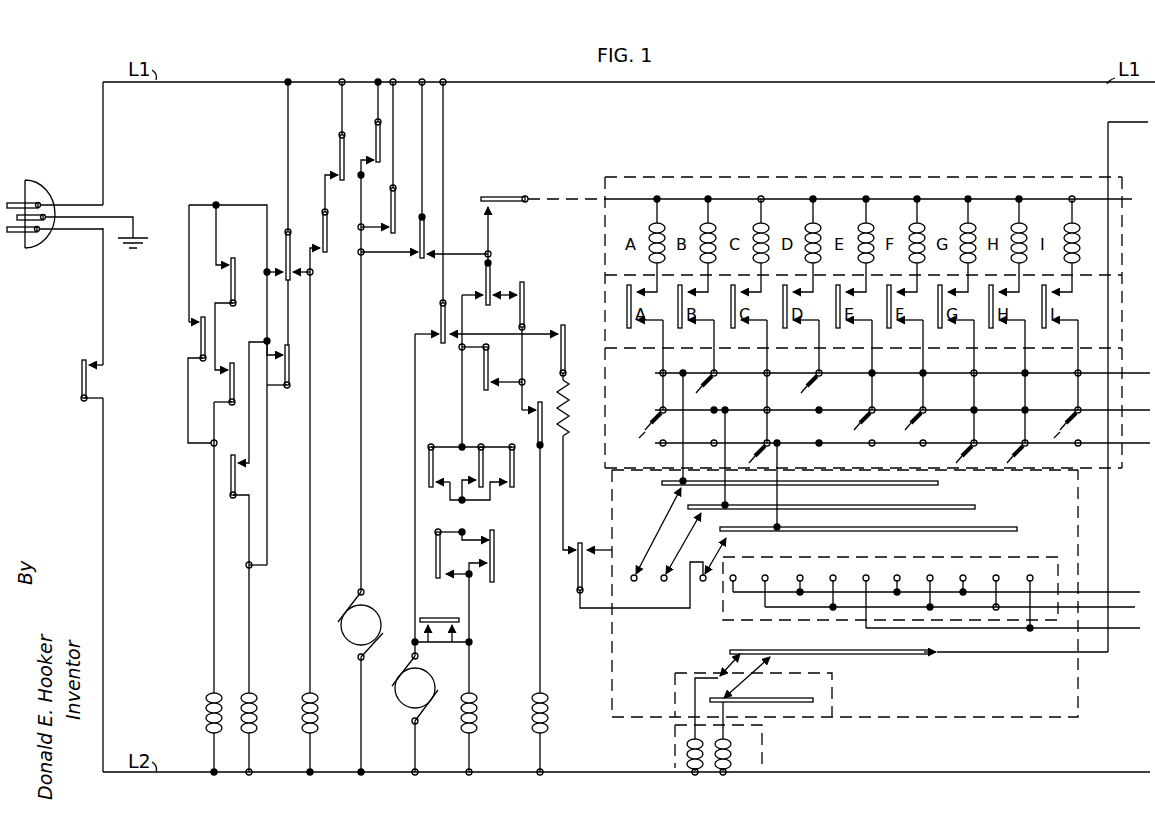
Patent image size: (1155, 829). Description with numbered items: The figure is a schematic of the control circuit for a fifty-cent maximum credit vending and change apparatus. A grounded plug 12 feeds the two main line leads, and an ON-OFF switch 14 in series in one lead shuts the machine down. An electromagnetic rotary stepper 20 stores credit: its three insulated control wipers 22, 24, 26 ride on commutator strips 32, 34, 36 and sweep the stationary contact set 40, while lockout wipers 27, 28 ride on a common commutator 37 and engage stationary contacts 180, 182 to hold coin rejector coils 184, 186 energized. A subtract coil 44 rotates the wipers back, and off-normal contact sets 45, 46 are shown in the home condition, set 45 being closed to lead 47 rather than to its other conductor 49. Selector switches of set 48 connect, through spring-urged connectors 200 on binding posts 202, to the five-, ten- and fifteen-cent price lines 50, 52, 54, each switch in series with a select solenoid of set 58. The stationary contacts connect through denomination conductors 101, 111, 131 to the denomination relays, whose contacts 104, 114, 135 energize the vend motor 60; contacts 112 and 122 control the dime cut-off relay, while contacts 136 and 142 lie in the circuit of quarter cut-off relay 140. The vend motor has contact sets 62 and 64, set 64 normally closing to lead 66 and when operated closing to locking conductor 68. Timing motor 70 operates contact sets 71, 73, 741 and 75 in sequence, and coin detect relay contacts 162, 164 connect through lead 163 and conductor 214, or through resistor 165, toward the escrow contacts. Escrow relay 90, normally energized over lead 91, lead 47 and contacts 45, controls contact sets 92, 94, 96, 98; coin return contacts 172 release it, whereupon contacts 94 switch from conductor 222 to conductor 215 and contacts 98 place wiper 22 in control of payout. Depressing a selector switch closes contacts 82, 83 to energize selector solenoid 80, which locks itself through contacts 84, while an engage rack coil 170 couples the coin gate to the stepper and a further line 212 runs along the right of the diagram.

The grounded plug 12 is at (37, 199).
The ON-OFF switch 14 is at (90, 357).
The timing motor contact set 741 is at (226, 261).
The conductor 49 is at (265, 301).
The dime cut-off relay contacts 122 is at (198, 324).
The 10¢ relay contacts 112 is at (228, 374).
The quarter payout solenoid contacts 136 is at (246, 456).
The off-normal contact set 45 is at (274, 278).
The quarter cut-off relay contacts 142 is at (278, 352).
The lead 47 is at (310, 248).
The coin return lever contacts 172 is at (314, 248).
The escrow contact set 92 is at (338, 172).
The timing motor contact set 71 is at (372, 154).
The vend motor contact set 62 is at (384, 226).
The lead 163 is at (372, 258).
The coin detect relay contacts 162 is at (426, 264).
The conductor 214 is at (466, 244).
The conductor 222 is at (470, 287).
The escrow contact set 94 is at (493, 278).
The escrow contact set 96 is at (496, 202).
The conductor 215 is at (506, 290).
The timing motor contact set 75 is at (522, 286).
The lead 66 is at (482, 334).
The coin detect relay contacts 164 is at (552, 332).
The resistor 165 is at (572, 412).
The vend motor contact set 64 is at (442, 338).
The timing motor contact set 73 is at (490, 382).
The off-normal contact set 46 is at (534, 422).
The conductor 68 is at (414, 456).
The 10¢ relay contacts 114 is at (476, 474).
The 5¢ relay contacts 104 is at (439, 492).
The 25¢ relay contacts 135 is at (509, 492).
The locking contact set 84 is at (447, 573).
The switch contacts 82 is at (480, 578).
The switch contacts 83 is at (456, 617).
The escrow contact set 98 is at (582, 542).
The timing motor 70 is at (380, 620).
The vend motor 60 is at (406, 706).
The selector controlled solenoid 80 is at (477, 714).
The subtract coil 44 is at (548, 718).
The escrow relay 90 is at (320, 702).
The lead 91 is at (310, 468).
The quarter cut-off relay 140 is at (276, 690).
The engage rack coil 170 is at (204, 702).
The select solenoids 58 is at (651, 176).
The selector switch set 48 is at (1108, 340).
The U-shaped spring-urged connector 200 is at (666, 406).
The binding post 202 is at (648, 416).
The 15¢ price line 54 is at (1124, 380).
The 10¢ price line 52 is at (1124, 416).
The 5¢ price line 50 is at (1124, 450).
The commutator strip 36 is at (936, 484).
The commutator strip 34 is at (974, 508).
The commutator strip 32 is at (1016, 532).
The 15¢ control wiper 26 is at (672, 508).
The 10¢ control wiper 24 is at (694, 530).
The 5¢ control wiper 22 is at (710, 562).
The stationary contact set 40 is at (1008, 562).
The 5¢ denomination conductor 101 is at (1138, 590).
The 10¢ denomination conductor 111 is at (1134, 610).
The 25¢ denomination conductor 131 is at (1136, 632).
The conductor 212 is at (1134, 122).
The commutator strip 37 is at (814, 652).
The lockout wiper 27 is at (729, 666).
The lockout wiper 28 is at (748, 678).
The stationary contact 180 is at (692, 680).
The stationary contact 182 is at (796, 704).
The coin rejector coil 184 is at (688, 746).
The coin rejector coil 186 is at (734, 748).
The electromagnetic rotary stepper 20 is at (612, 665).